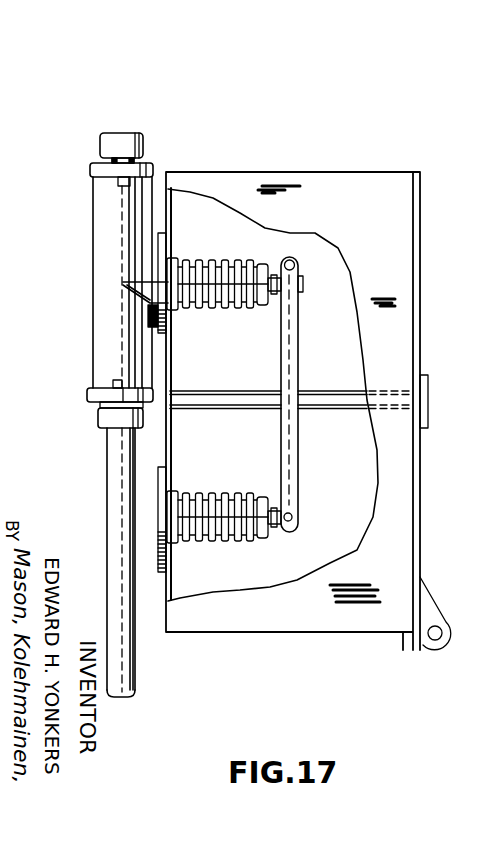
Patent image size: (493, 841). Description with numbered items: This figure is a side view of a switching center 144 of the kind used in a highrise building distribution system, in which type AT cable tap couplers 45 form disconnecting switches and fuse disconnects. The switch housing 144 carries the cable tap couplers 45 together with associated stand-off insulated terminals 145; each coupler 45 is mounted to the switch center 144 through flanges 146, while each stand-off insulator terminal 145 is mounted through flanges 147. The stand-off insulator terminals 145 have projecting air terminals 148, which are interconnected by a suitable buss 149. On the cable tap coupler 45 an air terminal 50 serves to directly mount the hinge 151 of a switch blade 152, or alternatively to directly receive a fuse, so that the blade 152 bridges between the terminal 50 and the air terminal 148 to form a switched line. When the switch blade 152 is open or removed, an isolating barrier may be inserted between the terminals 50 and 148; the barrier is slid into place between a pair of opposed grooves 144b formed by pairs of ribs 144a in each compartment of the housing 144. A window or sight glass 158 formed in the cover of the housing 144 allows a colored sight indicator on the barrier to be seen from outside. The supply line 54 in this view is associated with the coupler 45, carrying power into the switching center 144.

The switching center 144 is at (268, 108).
The ribs 144a is at (237, 381).
The grooves 144b is at (356, 444).
The flanges 146 is at (131, 283).
The cable tap coupler 45 is at (93, 232).
The operating rod 54 is at (108, 478).
The hinge 151 is at (298, 258).
The air terminal 50 is at (303, 283).
The switch blade 152 is at (300, 350).
The sight glass 158 is at (424, 430).
The flanges 147 is at (492, 478).
The stand-off insulated terminal 145 is at (492, 530).
The air terminals 148 is at (260, 538).
The buss 149 is at (268, 505).